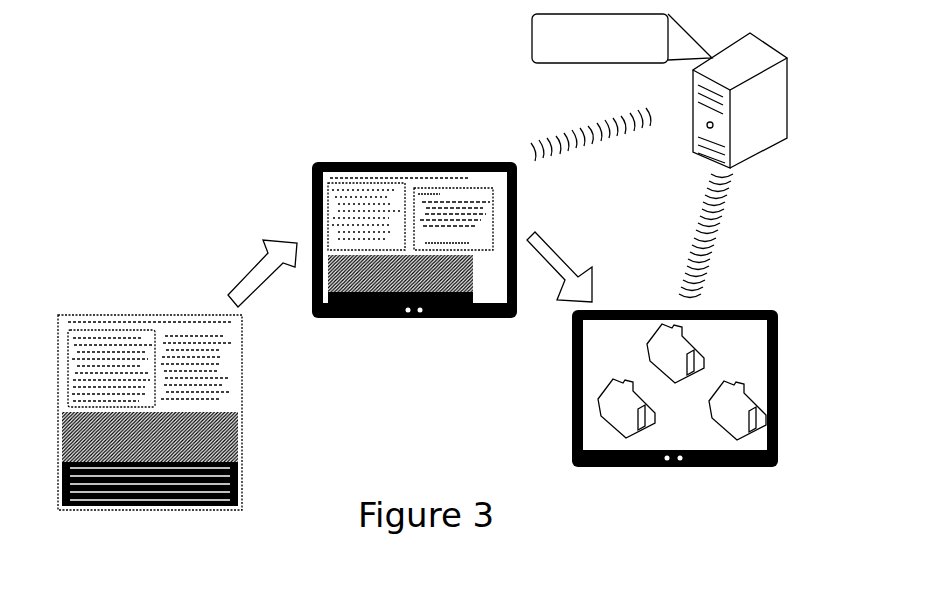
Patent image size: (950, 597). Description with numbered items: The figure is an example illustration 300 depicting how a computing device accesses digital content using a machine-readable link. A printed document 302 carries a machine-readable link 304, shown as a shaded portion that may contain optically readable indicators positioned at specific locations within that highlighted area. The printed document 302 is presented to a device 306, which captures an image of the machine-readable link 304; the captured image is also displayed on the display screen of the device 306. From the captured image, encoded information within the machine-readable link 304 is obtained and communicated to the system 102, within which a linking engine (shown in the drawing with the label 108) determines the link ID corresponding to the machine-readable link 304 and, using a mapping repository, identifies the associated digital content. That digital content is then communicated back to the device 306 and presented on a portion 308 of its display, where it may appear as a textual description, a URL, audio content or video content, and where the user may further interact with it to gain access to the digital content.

The system 102 is at (777, 50).
The linking engine 108 is at (622, 38).
The example illustration 300 is at (737, 308).
The printed document 302 is at (148, 314).
The machine-readable link 304 is at (68, 377).
The device 306 is at (327, 162).
The portion 308 is at (435, 190).